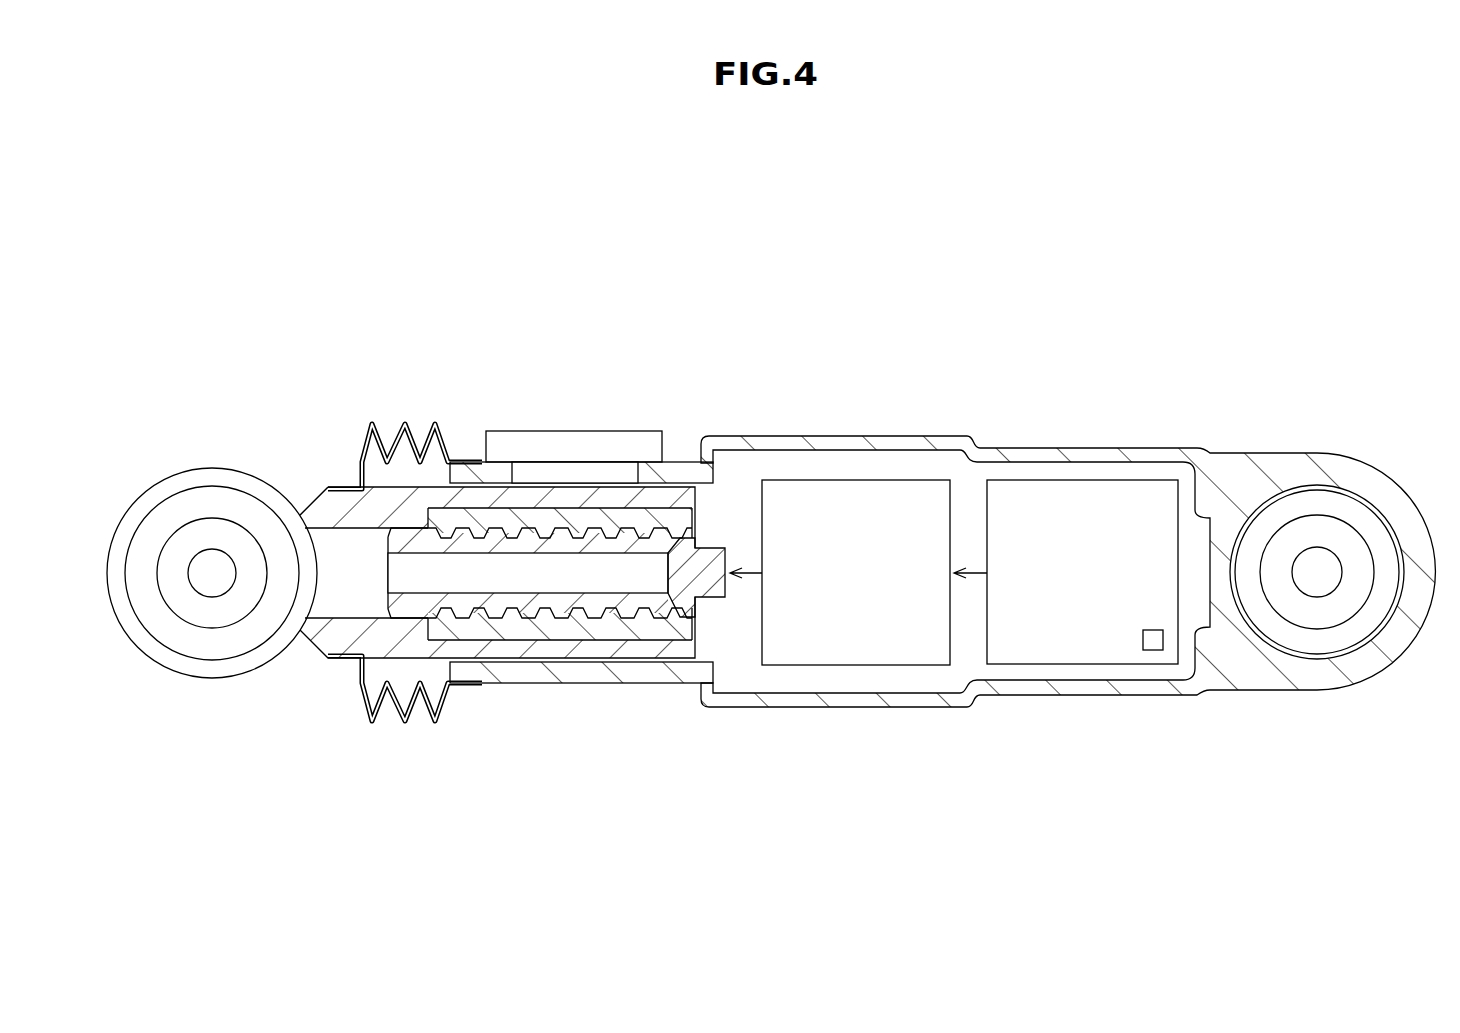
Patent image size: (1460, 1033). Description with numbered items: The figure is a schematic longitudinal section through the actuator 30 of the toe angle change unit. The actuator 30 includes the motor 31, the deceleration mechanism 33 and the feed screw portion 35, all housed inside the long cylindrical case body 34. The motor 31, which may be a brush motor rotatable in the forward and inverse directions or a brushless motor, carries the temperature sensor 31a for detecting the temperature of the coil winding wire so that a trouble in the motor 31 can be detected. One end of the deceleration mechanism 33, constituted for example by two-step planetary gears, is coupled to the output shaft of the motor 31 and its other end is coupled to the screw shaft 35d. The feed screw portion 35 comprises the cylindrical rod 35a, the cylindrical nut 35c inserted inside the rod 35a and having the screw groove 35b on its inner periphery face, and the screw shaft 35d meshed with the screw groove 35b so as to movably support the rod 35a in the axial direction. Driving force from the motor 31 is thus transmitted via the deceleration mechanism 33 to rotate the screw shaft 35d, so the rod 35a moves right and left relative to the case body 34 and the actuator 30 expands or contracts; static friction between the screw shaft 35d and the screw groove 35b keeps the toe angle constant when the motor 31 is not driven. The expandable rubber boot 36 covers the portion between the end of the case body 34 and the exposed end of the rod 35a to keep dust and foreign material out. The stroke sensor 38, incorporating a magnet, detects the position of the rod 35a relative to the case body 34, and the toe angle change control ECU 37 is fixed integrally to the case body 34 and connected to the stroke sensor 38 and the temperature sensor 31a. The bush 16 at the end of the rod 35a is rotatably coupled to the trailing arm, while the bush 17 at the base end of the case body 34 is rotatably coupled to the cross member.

The bush 16 is at (180, 484).
The bush 17 is at (1352, 480).
The actuator 30 is at (1108, 285).
The motor 31 is at (1120, 480).
The temperature sensor 31a is at (1155, 650).
The deceleration mechanism 33 is at (873, 480).
The case body 34 is at (537, 672).
The feed screw portion 35 is at (587, 662).
The rod 35a is at (347, 645).
The screw groove 35b is at (455, 598).
The nut 35c is at (500, 630).
The screw shaft 35d is at (645, 598).
The boot 36 is at (405, 423).
The toe angle change control ECU 37 is at (610, 432).
The stroke sensor 38 is at (548, 468).